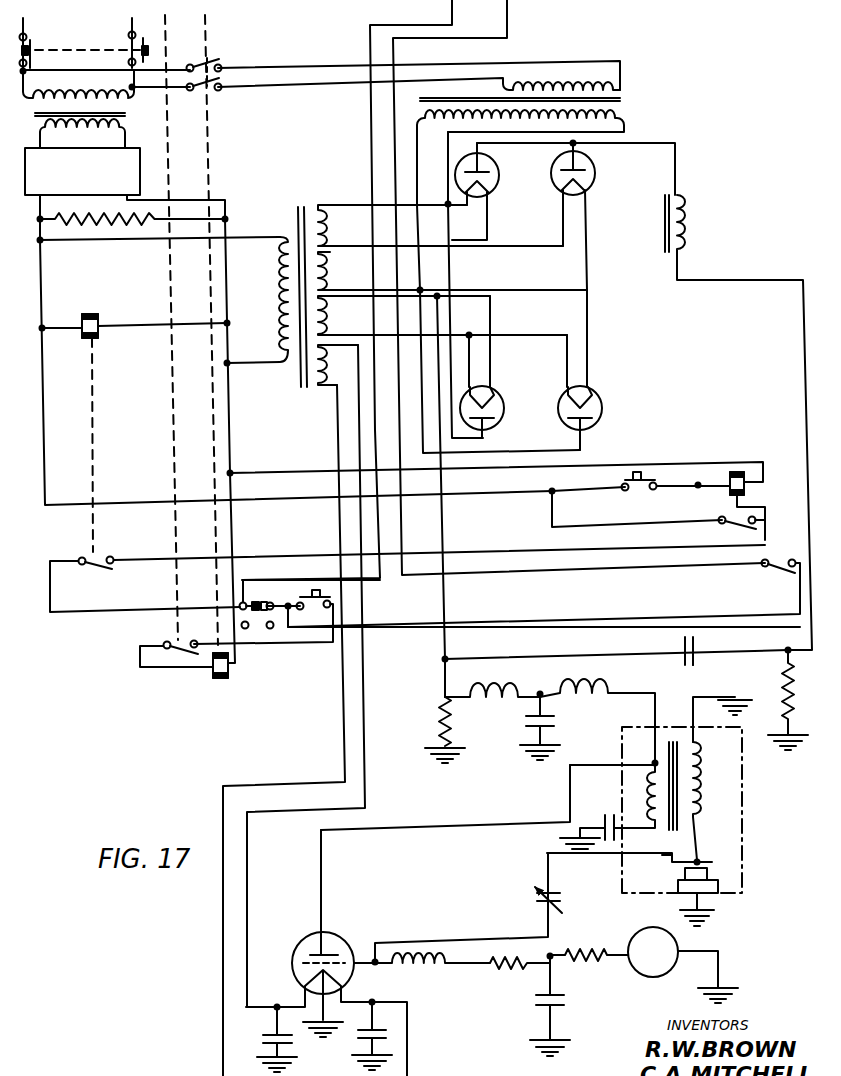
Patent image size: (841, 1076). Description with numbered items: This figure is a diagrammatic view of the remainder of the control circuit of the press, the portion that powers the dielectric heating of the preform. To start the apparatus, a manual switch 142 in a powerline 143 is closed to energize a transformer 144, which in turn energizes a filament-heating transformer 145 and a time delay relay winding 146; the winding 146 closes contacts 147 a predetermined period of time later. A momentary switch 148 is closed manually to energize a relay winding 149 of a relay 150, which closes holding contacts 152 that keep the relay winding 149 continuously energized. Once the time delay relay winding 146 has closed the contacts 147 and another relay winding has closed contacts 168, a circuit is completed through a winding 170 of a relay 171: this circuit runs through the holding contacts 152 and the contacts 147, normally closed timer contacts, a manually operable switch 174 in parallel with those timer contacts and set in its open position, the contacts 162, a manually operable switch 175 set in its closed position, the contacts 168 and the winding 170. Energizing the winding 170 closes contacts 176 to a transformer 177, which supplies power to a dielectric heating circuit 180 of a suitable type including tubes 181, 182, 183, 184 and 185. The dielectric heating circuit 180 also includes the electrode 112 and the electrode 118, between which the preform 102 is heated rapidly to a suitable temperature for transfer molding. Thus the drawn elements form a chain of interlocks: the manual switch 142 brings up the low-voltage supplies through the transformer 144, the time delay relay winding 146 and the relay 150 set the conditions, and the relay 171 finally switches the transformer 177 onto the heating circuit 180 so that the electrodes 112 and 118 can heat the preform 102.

The powerline 143 is at (150, 25).
The manual switch 142 is at (152, 48).
The contacts 176 is at (221, 61).
The transformer 144 is at (137, 111).
The filament-heating transformer 145 is at (304, 199).
The time delay relay winding 146 is at (94, 312).
The contacts 147 is at (98, 559).
The momentary switch 148 is at (639, 490).
The relay winding 149 is at (727, 486).
The relay 150 is at (727, 474).
The holding contacts 152 is at (730, 526).
The contacts 162 is at (768, 569).
The contacts 168 is at (169, 644).
The winding 170 is at (230, 667).
The relay 171 is at (205, 681).
The manually operable switch 174 is at (246, 602).
The manually operable switch 175 is at (297, 602).
The transformer 177 is at (634, 90).
The dielectric heating circuit 180 is at (325, 766).
The tube 181 is at (497, 173).
The tube 182 is at (595, 172).
The tube 183 is at (497, 393).
The tube 184 is at (596, 385).
The tube 185 is at (350, 936).
The electrode 112 is at (706, 859).
The preform 102 is at (712, 872).
The electrode 118 is at (704, 901).